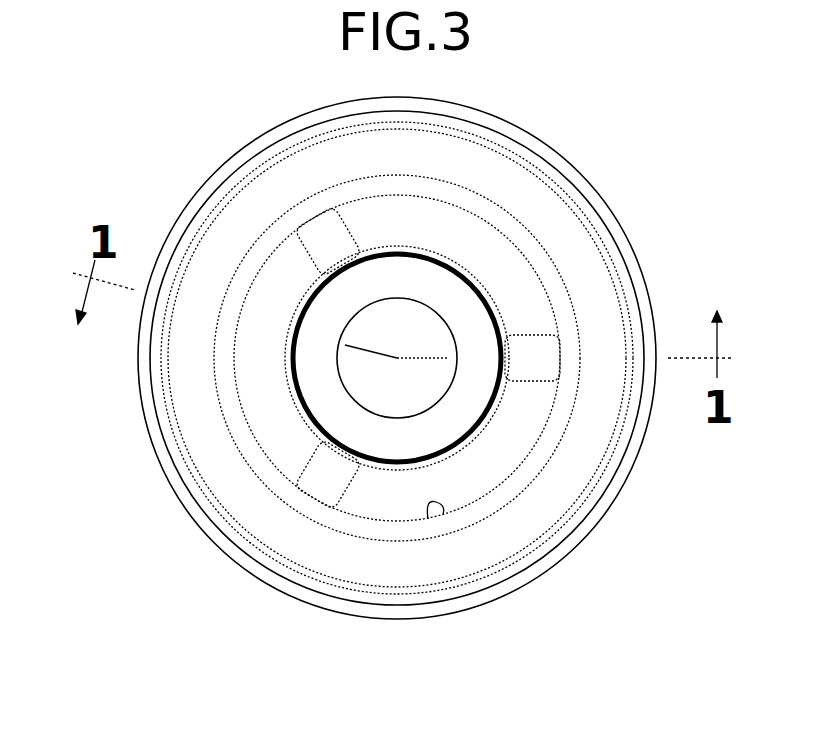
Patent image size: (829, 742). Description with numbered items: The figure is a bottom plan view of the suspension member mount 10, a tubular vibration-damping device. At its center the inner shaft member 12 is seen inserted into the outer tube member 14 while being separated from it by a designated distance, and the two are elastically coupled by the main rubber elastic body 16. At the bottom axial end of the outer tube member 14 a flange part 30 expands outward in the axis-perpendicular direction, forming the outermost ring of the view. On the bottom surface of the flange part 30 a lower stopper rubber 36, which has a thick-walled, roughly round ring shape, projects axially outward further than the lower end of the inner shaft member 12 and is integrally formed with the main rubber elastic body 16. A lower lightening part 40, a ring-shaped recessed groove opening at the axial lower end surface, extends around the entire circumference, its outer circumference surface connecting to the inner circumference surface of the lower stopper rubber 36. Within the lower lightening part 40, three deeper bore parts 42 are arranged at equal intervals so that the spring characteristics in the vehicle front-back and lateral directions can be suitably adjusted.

The suspension member mount 10 is at (617, 129).
The inner shaft member 12 is at (291, 380).
The outer tube member 14 is at (584, 541).
The main rubber elastic body 16 is at (383, 208).
The flange part 30 is at (225, 172).
The lower stopper rubber 36 is at (330, 568).
The lower lightening part 40 is at (436, 503).
The bore parts 42 is at (333, 237).